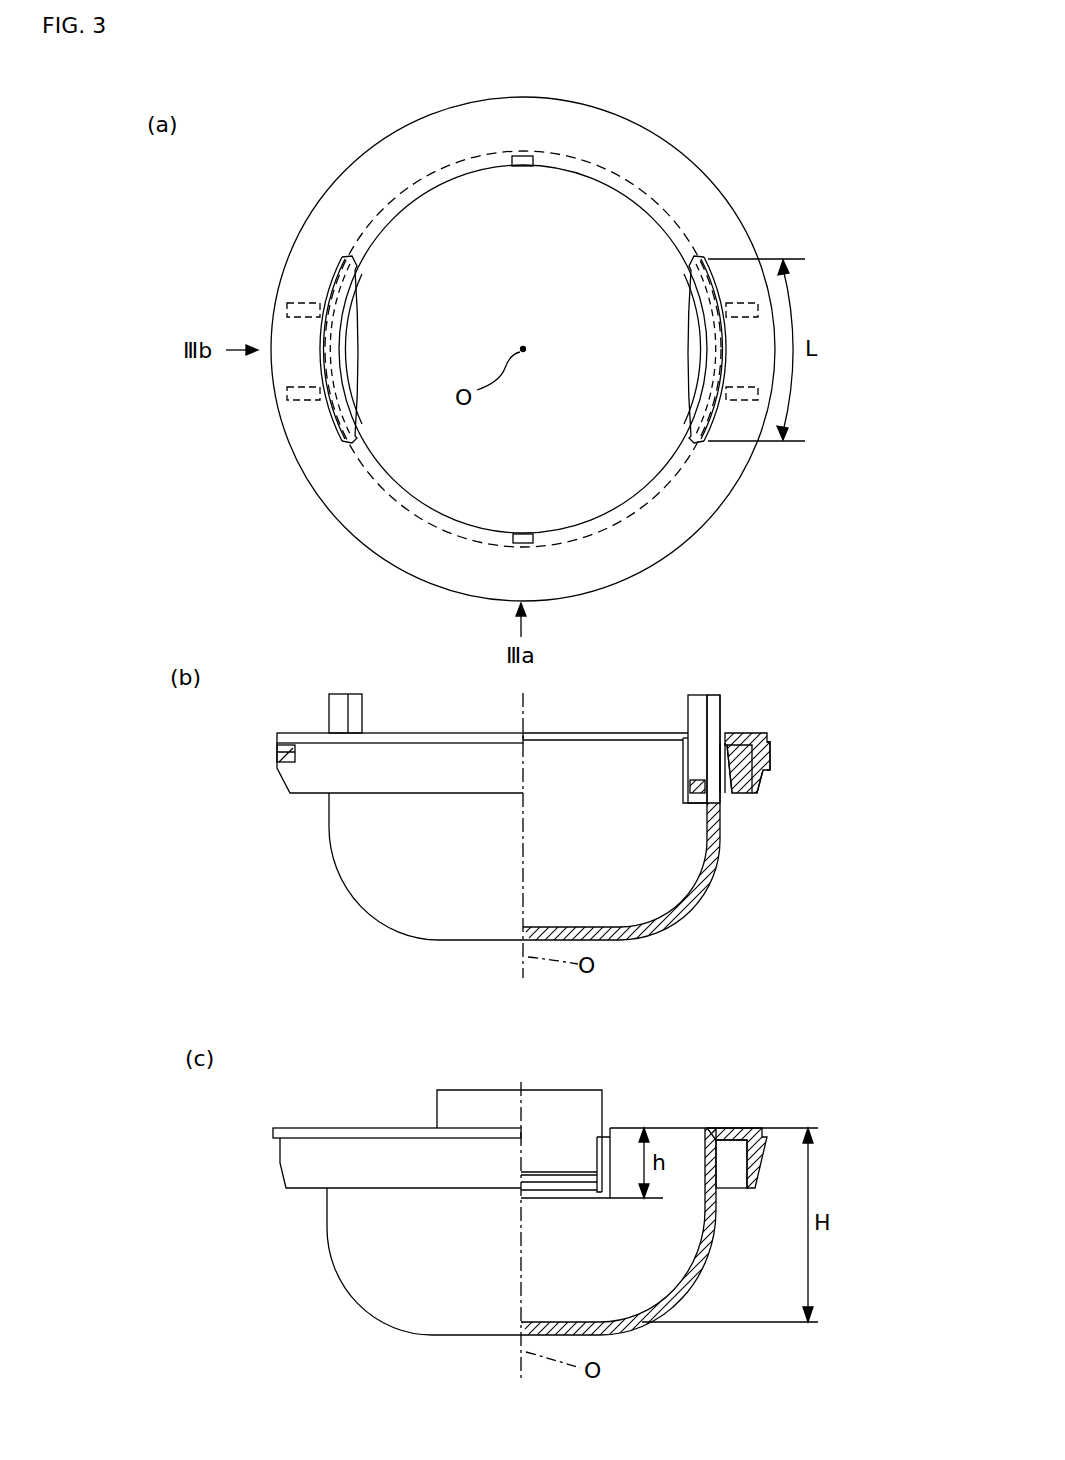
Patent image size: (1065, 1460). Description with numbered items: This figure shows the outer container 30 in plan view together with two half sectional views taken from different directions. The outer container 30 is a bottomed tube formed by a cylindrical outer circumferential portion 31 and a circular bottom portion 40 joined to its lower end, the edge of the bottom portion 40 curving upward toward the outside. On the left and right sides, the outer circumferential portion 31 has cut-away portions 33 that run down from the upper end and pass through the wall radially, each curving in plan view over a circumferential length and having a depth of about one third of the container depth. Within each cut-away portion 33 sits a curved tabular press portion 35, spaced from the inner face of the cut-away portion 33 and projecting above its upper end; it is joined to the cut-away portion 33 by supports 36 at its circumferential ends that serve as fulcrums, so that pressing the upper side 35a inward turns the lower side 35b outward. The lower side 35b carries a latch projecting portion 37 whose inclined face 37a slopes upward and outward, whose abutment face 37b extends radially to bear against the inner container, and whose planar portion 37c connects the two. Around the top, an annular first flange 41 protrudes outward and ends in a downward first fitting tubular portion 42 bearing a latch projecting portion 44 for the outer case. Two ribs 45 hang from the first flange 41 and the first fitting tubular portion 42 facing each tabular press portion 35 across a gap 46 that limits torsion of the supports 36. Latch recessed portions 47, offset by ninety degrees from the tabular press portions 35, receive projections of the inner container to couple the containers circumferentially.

The outer container 30 is at (728, 136).
The outer circumferential portion 31 is at (688, 232).
The cut-away portion 33 is at (337, 278).
The tabular press portion 35 is at (330, 357).
The upper side of the tabular press portion 35a is at (577, 1100).
The lower side of the tabular press portion 35b is at (540, 1172).
The support 36 is at (605, 1150).
The latch projecting portion 37 is at (692, 787).
The inclined face 37a is at (557, 1165).
The abutment face 37b is at (590, 1190).
The planar portion 37c is at (567, 1182).
The bottom portion 40 is at (573, 218).
The first flange 41 is at (762, 733).
The first fitting tubular portion 42 is at (757, 781).
The latch projecting portion 44 is at (770, 756).
The rib 45 is at (300, 303).
The gap 46 is at (724, 786).
The latch recessed portion 47 is at (524, 167).